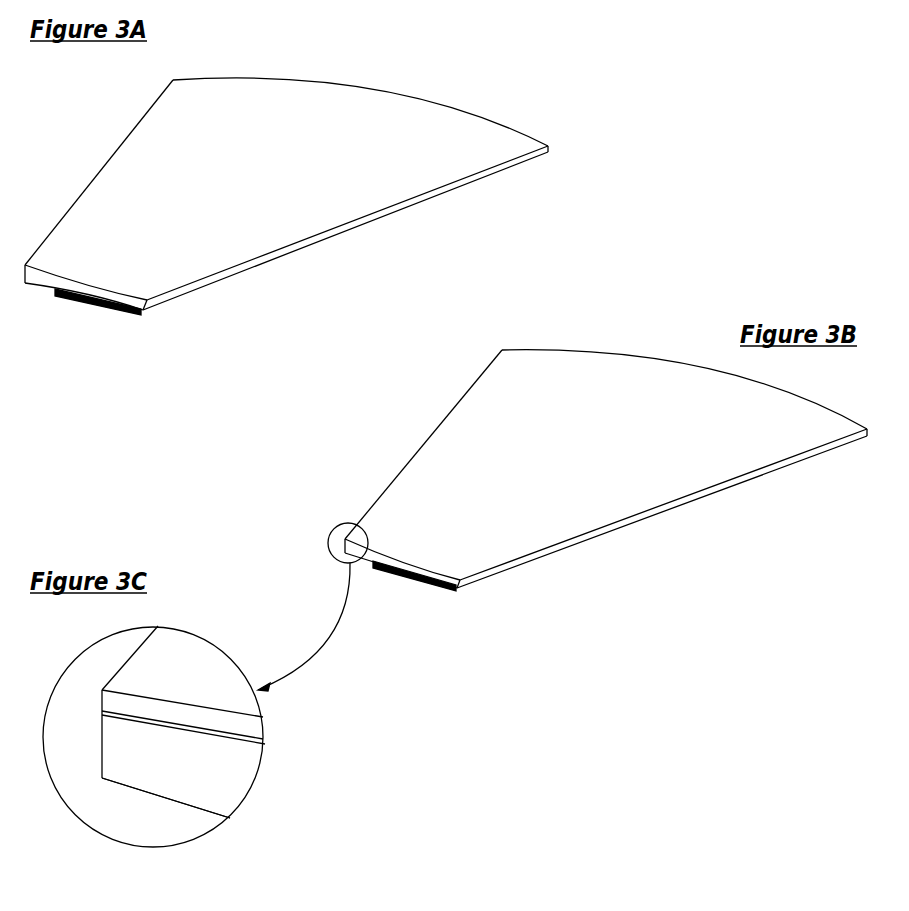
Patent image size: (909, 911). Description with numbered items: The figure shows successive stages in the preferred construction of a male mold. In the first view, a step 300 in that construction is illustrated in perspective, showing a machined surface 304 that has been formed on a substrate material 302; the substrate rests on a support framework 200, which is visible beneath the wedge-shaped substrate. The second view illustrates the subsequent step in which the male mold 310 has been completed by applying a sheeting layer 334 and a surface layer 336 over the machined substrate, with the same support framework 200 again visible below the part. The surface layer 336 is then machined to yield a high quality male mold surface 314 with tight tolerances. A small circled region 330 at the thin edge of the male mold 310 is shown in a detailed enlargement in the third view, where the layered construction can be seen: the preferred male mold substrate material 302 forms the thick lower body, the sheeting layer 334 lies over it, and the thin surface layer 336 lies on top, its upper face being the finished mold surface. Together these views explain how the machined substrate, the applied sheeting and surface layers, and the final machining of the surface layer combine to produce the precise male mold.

In FIG. 3A, the step 300 is at (492, 105).
In FIG. 3A, the substrate material 302 is at (518, 165).
In FIG. 3B, the substrate material 302 is at (787, 467).
In FIG. 3C, the substrate material 302 is at (182, 803).
In FIG. 3A, the machined surface 304 is at (183, 242).
In FIG. 3A, the support framework 200 is at (126, 313).
In FIG. 3B, the support framework 200 is at (423, 591).
In FIG. 3B, the male mold 310 is at (613, 346).
In FIG. 3B, the male mold surface 314 is at (516, 508).
In FIG. 3B, the region 330 is at (328, 546).
In FIG. 3C, the region 330 is at (203, 637).
In FIG. 3C, the sheeting layer 334 is at (200, 737).
In FIG. 3C, the surface layer 336 is at (265, 745).